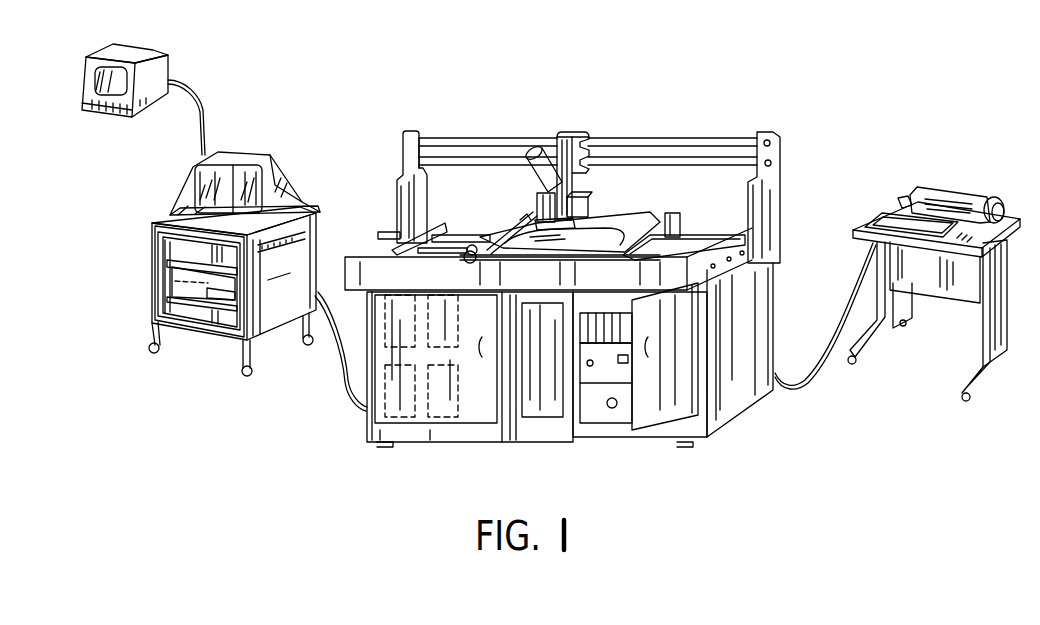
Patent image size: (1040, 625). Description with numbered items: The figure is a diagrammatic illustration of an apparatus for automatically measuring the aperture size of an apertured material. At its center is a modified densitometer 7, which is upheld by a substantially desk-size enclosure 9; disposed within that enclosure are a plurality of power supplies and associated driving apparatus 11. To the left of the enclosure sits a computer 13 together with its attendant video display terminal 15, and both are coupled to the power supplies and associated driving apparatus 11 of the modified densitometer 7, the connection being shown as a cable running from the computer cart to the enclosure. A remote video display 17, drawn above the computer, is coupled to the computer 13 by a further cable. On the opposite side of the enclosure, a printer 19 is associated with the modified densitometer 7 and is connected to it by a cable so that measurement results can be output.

The modified densitometer 7 is at (596, 269).
The substantially desk-size enclosure 9 is at (740, 398).
The power supplies and associated driving apparatus 11 is at (400, 412).
The computer 13 is at (148, 254).
The video display terminal 15 is at (290, 154).
The remote video display 17 is at (158, 47).
The printer 19 is at (972, 192).